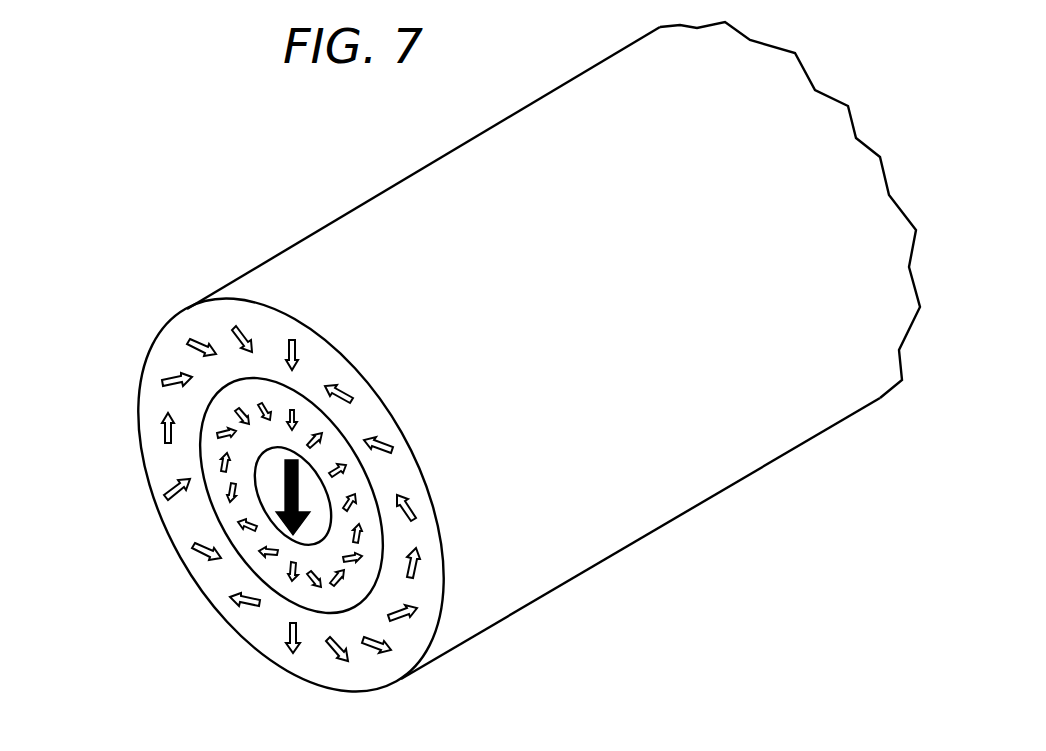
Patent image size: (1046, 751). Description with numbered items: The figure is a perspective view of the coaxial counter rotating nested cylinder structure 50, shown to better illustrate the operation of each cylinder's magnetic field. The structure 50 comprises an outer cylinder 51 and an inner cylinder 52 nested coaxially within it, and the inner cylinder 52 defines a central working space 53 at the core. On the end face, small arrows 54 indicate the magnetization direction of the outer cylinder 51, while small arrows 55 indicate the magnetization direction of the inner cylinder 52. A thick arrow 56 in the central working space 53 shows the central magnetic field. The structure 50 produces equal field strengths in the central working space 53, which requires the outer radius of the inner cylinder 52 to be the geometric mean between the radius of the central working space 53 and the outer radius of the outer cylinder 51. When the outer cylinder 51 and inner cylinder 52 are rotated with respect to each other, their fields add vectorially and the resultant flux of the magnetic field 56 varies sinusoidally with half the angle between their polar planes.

The coaxial counter rotating nested cylinder structure 50 is at (141, 160).
The outer cylinder 51 is at (145, 364).
The inner cylinder 52 is at (272, 568).
The central working space 53 is at (312, 520).
The small arrows 54 is at (152, 442).
The small arrows 55 is at (281, 404).
The thick arrow 56 is at (276, 482).